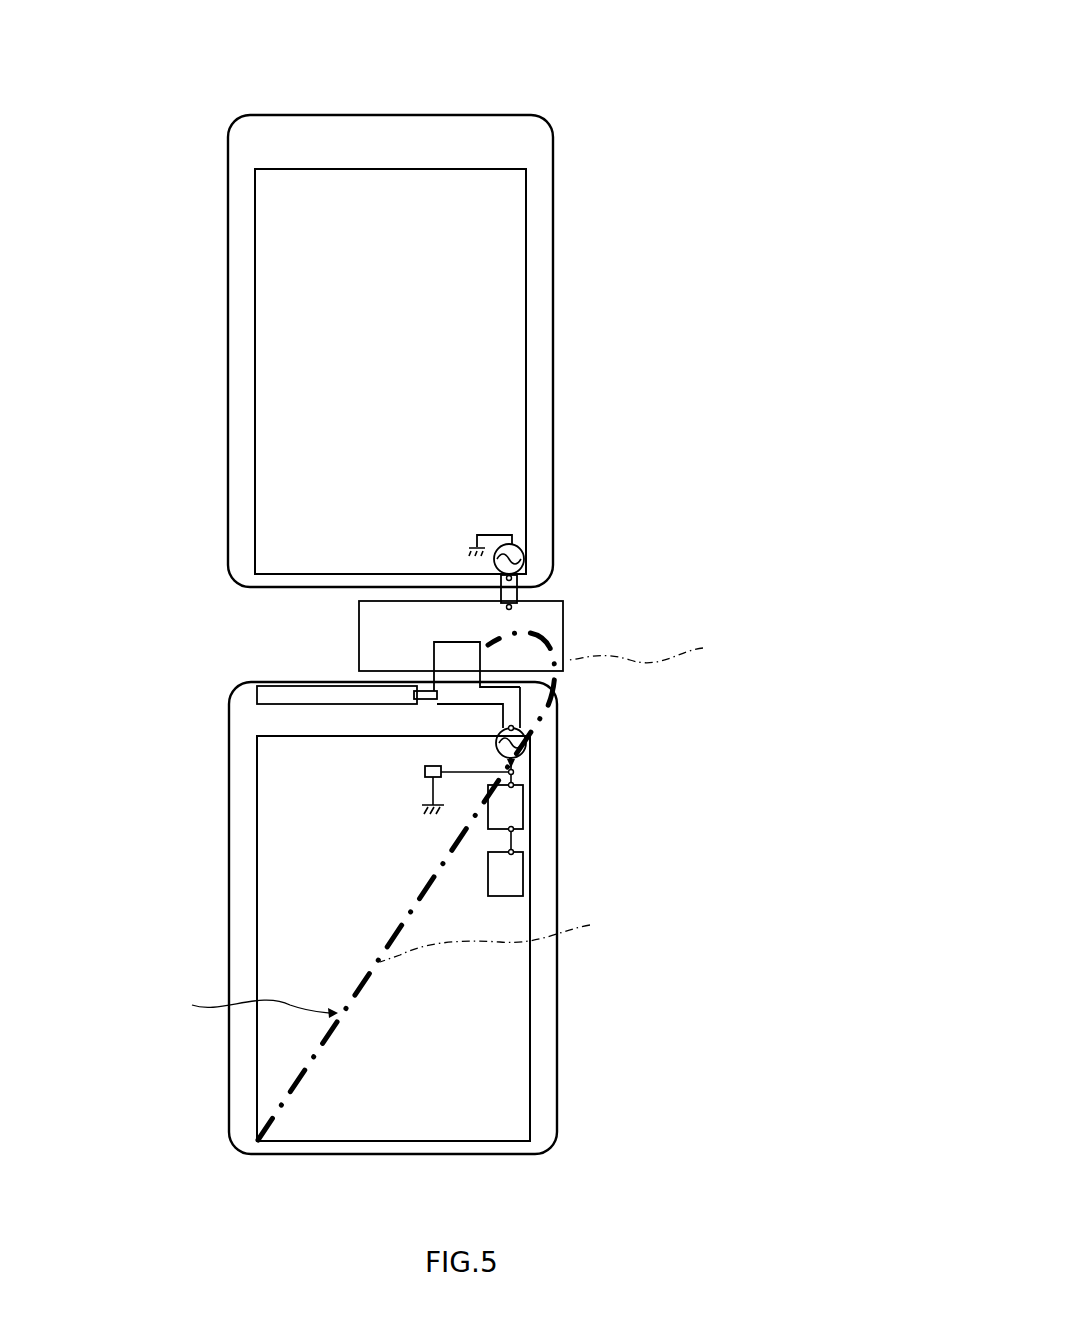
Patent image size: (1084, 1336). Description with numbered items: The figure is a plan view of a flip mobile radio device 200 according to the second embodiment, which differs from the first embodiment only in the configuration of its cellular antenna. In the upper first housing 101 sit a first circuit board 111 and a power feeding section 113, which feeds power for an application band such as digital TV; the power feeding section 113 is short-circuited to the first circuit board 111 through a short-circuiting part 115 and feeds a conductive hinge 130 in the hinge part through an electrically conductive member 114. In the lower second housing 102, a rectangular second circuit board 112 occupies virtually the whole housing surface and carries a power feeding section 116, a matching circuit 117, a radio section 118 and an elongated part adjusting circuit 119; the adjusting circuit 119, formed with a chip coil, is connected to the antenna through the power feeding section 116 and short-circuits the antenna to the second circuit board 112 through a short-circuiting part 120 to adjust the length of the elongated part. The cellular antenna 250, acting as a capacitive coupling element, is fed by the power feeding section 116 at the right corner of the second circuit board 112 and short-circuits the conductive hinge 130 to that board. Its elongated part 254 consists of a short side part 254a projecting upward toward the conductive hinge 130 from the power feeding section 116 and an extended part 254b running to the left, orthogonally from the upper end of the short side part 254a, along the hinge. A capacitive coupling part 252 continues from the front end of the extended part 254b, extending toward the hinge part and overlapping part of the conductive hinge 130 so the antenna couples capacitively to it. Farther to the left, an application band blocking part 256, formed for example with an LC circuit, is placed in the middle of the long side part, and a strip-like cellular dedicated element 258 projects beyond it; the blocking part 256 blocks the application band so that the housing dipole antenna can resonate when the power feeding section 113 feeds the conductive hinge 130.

The flip mobile radio device 200 is at (693, 10).
The first housing 101 is at (538, 152).
The first circuit board 111 is at (505, 228).
The short-circuiting part 115 is at (497, 535).
The power feeding section 113 is at (521, 548).
The conductive member 114 is at (520, 592).
The conductive hinge 130 is at (553, 612).
The cellular antenna 250 is at (438, 654).
The capacitive coupling part 252 is at (455, 647).
The elongated part 254 is at (564, 695).
The short side part 254a is at (515, 718).
The extended part 254b is at (495, 696).
The application band blocking part 256 is at (423, 690).
The cellular dedicated element 258 is at (267, 698).
The second housing 102 is at (540, 1040).
The second circuit board 112 is at (288, 885).
The power feeding section 116 is at (527, 748).
The matching circuit 117 is at (518, 810).
The radio section 118 is at (518, 880).
The elongated part adjusting circuit 119 is at (424, 772).
The short-circuiting part 120 is at (421, 806).